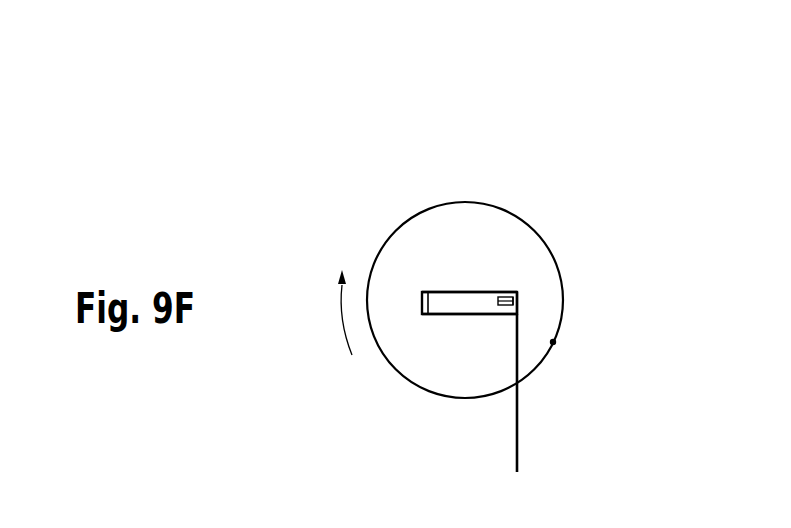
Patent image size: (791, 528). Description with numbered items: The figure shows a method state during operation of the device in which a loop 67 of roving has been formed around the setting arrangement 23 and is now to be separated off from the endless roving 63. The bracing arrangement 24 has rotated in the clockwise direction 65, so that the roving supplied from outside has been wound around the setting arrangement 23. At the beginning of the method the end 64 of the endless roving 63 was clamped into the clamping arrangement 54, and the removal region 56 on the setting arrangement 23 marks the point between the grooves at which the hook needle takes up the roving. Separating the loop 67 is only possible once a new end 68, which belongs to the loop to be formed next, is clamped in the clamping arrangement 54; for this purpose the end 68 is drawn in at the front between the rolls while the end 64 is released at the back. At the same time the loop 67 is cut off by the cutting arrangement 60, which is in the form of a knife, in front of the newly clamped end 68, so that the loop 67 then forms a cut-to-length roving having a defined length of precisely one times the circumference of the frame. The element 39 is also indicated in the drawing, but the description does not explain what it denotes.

The setting arrangement 23 is at (400, 352).
The bracing arrangement 24 is at (352, 243).
The workpiece surface 39 is at (553, 342).
The clamping arrangement 54 is at (520, 306).
The removal region 56 is at (422, 300).
The cutting arrangement 60 is at (511, 293).
The endless roving 63 is at (538, 450).
The end of the endless roving 64 is at (520, 303).
The clockwise direction 65 is at (340, 325).
The loop 67 is at (479, 270).
The end of the loop to be newly formed 68 is at (522, 300).